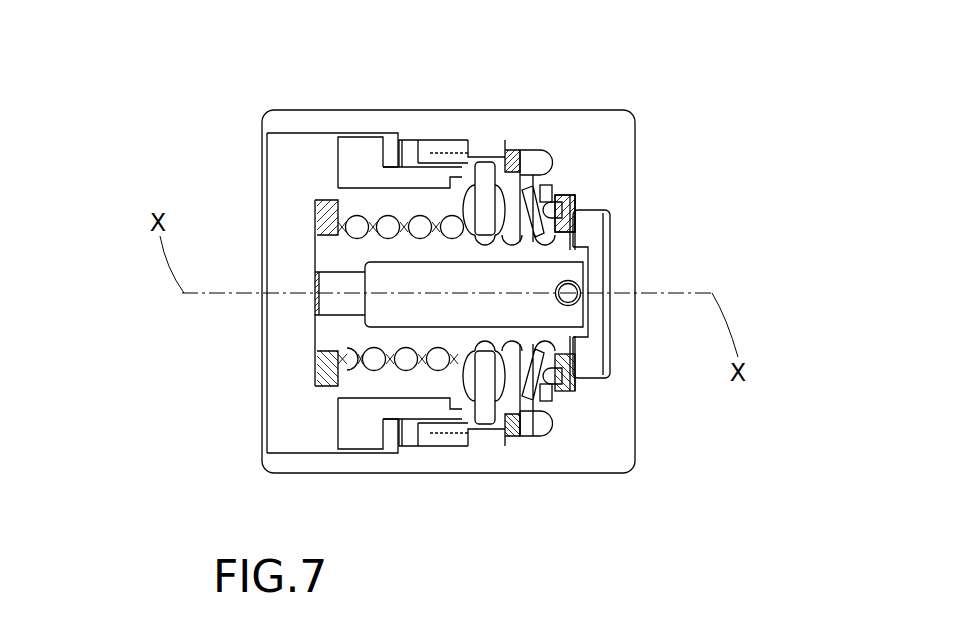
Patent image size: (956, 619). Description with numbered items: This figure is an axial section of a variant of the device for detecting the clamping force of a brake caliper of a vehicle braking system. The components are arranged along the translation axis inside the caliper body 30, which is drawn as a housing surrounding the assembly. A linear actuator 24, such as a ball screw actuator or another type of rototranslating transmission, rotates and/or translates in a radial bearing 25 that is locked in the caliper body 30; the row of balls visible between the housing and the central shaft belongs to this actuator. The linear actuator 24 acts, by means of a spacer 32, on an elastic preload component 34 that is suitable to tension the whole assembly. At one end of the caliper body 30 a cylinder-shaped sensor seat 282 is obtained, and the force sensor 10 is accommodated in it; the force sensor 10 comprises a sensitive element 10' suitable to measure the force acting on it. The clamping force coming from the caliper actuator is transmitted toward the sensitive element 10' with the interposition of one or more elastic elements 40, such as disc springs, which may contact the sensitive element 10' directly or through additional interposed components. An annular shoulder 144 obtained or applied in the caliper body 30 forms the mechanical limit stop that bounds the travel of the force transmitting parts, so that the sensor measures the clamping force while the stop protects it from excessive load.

The caliper body 30 is at (328, 109).
The radial bearing 25 is at (452, 140).
The linear actuator 24 is at (390, 200).
The elastic element 40 is at (541, 150).
The force sensor 10 is at (644, 148).
The sensitive element 10' is at (669, 276).
The spacer 32 is at (483, 437).
The elastic preload component 34 is at (528, 437).
The annular shoulder 144 is at (553, 407).
The sensor seat 282 is at (573, 393).